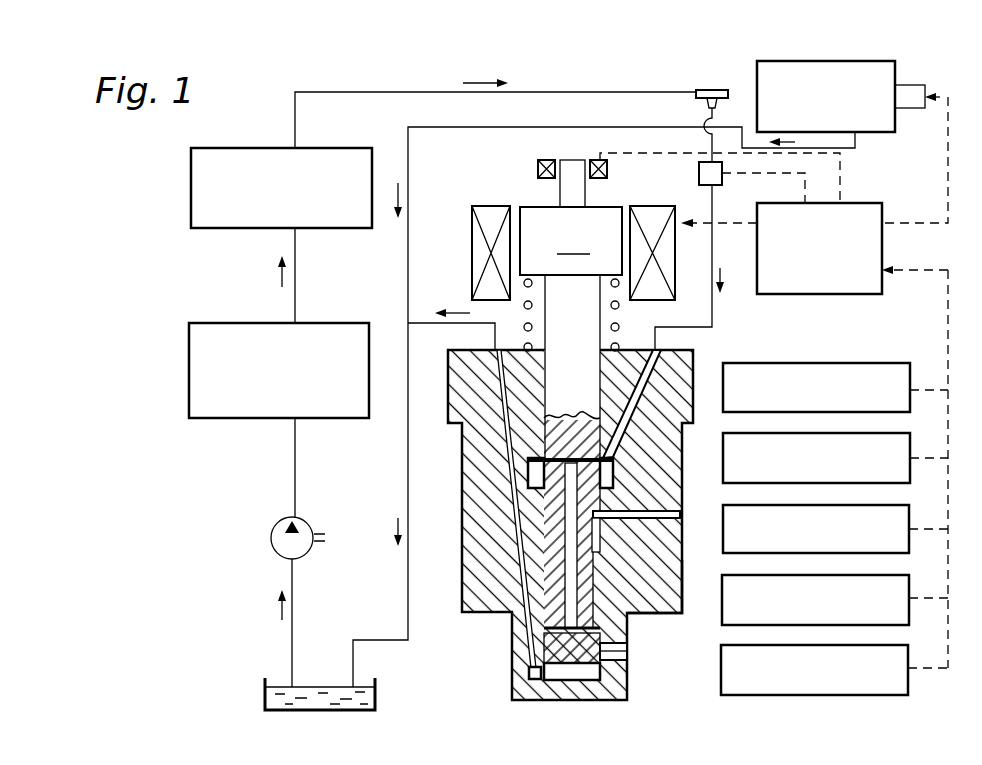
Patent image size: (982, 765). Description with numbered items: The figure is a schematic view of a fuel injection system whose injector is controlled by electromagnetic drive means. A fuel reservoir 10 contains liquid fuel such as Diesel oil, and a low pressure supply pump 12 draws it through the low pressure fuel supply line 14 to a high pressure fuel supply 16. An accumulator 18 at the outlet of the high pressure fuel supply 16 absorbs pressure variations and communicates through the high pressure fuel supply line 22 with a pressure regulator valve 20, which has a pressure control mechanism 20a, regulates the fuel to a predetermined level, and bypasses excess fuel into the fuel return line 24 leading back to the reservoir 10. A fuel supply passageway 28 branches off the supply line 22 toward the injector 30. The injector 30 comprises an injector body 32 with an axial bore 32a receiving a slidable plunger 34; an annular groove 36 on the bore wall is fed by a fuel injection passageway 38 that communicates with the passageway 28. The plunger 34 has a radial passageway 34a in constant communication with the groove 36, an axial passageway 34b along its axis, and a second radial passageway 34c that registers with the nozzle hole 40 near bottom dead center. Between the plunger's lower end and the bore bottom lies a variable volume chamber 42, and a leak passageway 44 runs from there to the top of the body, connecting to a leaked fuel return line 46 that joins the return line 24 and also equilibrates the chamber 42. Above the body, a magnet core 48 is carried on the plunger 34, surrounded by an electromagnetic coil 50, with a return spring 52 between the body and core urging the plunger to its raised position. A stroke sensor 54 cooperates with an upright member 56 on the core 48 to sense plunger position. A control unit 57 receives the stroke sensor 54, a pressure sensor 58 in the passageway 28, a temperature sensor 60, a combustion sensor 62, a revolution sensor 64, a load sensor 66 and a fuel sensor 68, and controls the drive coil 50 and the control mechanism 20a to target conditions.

The fuel reservoir 10 is at (265, 692).
The low pressure supply pump 12 is at (271, 540).
The low pressure fuel supply line 14 is at (292, 650).
The high pressure fuel supply 16 is at (189, 370).
The accumulator 18 is at (191, 190).
The pressure regulator valve 20 is at (878, 133).
The pressure control mechanism 20a is at (912, 110).
The high pressure fuel supply line 22 is at (360, 92).
The fuel return line 24 is at (545, 120).
The fuel supply passageway 28 is at (730, 251).
The injector 30 is at (592, 494).
The injector body 32 is at (693, 352).
The axial bore 32a is at (620, 590).
The plunger 34 is at (547, 543).
The radial passageway 34a is at (565, 430).
The axial passageway 34b is at (515, 588).
The second radial passageway 34c is at (545, 637).
The annular groove 36 is at (607, 472).
The fuel injection passageway 38 is at (648, 393).
The nozzle hole 40 is at (615, 650).
The chamber 42 is at (587, 680).
The leak passageway 44 is at (505, 500).
The leaked fuel return line 46 is at (428, 324).
The magnet core 48 is at (571, 241).
The electromagnetic coil 50 is at (472, 246).
The return spring 52 is at (620, 327).
The stroke sensor 54 is at (538, 169).
The upright member 56 is at (568, 192).
The control unit 57 is at (842, 294).
The pressure sensor 58 is at (699, 173).
The temperature sensor 60 is at (910, 363).
The combustion sensor 62 is at (910, 447).
The revolution sensor 64 is at (909, 520).
The load sensor 66 is at (909, 588).
The fuel sensor 68 is at (908, 660).